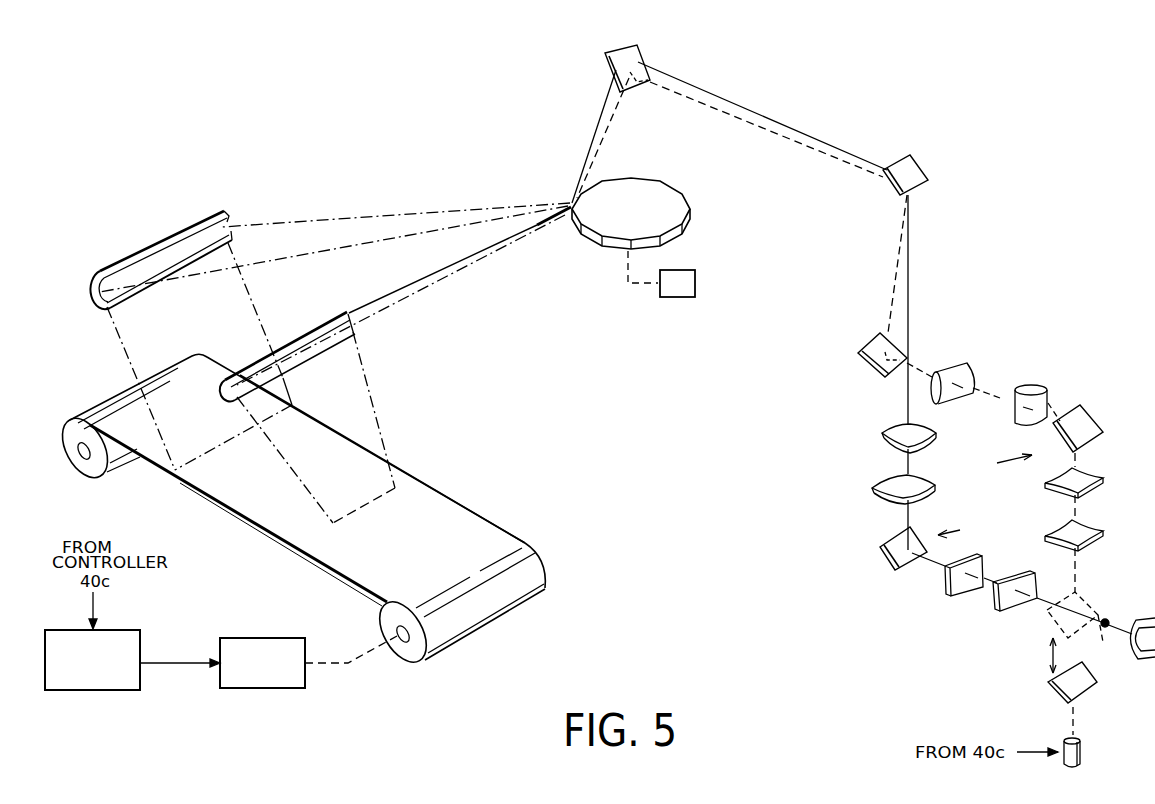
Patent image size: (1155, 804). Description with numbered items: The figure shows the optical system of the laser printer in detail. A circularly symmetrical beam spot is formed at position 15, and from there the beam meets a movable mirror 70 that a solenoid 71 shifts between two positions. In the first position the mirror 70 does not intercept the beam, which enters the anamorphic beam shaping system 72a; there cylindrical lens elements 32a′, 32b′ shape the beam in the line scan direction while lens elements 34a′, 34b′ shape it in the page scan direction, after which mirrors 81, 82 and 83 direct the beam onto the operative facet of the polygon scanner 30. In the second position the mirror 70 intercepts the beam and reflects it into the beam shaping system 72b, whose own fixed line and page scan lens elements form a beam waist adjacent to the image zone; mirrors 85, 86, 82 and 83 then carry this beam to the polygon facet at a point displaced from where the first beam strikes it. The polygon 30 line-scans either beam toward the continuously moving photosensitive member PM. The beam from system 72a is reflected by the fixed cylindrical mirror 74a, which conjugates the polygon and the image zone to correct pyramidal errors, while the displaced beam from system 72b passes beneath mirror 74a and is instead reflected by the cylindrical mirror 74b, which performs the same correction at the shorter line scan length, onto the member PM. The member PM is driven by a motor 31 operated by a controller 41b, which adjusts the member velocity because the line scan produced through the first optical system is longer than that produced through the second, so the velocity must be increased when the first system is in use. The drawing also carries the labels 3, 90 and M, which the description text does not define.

The photoreceptor belt 3 is at (478, 524).
The photosensitive member PM is at (323, 563).
The scan line 90 is at (349, 437).
The fixed cylindrical mirror 74a is at (356, 313).
The cylindrical mirror 74b is at (226, 208).
The polygon scanner 30 is at (660, 182).
The polygon motor M is at (677, 283).
The mirror 83 is at (647, 60).
The mirror 82 is at (929, 171).
The mirror 86 is at (858, 348).
The mirror 85 is at (1088, 427).
The beam shaping system 72b is at (992, 465).
The anamorphic beam shaping system 72a is at (971, 531).
The lens element 34b′ is at (890, 430).
The lens element 34a′ is at (892, 482).
The mirror 81 is at (880, 557).
The cylindrical lens element 32b′ is at (947, 590).
The cylindrical lens element 32a′ is at (999, 613).
The beam spot position 15 is at (1107, 619).
The mirror 70 is at (1085, 676).
The solenoid 71 is at (1083, 757).
The controller 41b is at (105, 669).
The motor 31 is at (272, 672).